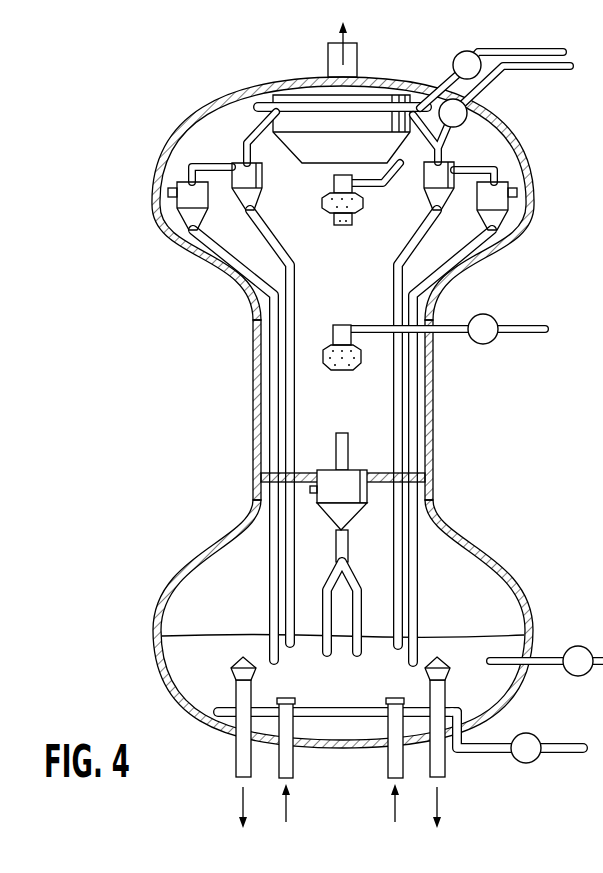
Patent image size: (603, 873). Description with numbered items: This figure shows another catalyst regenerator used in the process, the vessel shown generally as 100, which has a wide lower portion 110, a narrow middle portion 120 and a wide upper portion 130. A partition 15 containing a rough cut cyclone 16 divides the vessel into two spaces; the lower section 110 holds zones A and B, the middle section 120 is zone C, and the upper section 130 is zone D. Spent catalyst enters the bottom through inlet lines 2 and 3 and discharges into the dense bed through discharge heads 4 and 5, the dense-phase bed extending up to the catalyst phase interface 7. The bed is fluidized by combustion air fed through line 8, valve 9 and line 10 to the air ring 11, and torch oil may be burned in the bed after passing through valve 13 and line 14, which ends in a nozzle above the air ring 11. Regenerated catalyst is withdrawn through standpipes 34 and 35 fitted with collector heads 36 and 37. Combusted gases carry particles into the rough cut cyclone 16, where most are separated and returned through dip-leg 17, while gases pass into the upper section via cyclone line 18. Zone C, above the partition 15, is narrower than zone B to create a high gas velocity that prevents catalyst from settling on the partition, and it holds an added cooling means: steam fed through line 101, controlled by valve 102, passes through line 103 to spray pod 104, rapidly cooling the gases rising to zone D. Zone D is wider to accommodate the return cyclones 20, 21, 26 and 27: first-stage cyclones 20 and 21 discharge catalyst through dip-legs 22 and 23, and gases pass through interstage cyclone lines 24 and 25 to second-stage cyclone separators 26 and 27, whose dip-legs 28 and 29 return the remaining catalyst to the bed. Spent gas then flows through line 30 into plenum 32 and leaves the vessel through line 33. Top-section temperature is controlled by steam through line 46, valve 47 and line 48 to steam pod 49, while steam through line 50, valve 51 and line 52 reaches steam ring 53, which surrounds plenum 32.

The inlet line 2 is at (294, 751).
The inlet line 3 is at (388, 752).
The discharge head 4 is at (290, 700).
The discharge head 5 is at (390, 700).
The catalyst phase interface 7 is at (463, 634).
The combustion air line 8 is at (564, 745).
The valve 9 is at (536, 744).
The air line 10 is at (466, 728).
The air ring 11 is at (347, 707).
The valve 13 is at (580, 654).
The torch oil line 14 is at (495, 667).
The partition 15 is at (378, 472).
The rough cut cyclone 16 is at (356, 511).
The dip-leg 17 is at (327, 591).
The cyclone line 18 is at (335, 450).
The return cyclone 20 is at (205, 216).
The return cyclone 21 is at (484, 198).
The dip-leg 22 is at (258, 265).
The dip-leg 23 is at (466, 256).
The interstage cyclone line 24 is at (210, 162).
The interstage cyclone line 25 is at (487, 168).
The second-stage cyclone separator 26 is at (264, 180).
The second-stage cyclone separator 27 is at (424, 192).
The dip-leg 28 is at (291, 272).
The dip-leg 29 is at (419, 232).
The gas line 30 is at (262, 136).
The plenum 32 is at (331, 167).
The gas discharge line 33 is at (327, 50).
The standpipe 34 is at (256, 699).
The standpipe 35 is at (429, 690).
The collector head 36 is at (232, 666).
The collector head 37 is at (446, 666).
The steam line 46 is at (542, 70).
The valve 47 is at (468, 120).
The steam line 48 is at (444, 134).
The steam pod 49 is at (321, 207).
The steam line 50 is at (498, 49).
The valve 51 is at (464, 51).
The steam line 52 is at (446, 82).
The steam ring 53 is at (370, 102).
The regenerator vessel 100 is at (311, 412).
The steam line 101 is at (538, 327).
The valve 102 is at (488, 343).
The steam line 103 is at (367, 324).
The spray pod 104 is at (337, 371).
The lower portion 110 is at (152, 606).
The middle portion 120 is at (254, 462).
The upper portion 130 is at (152, 240).